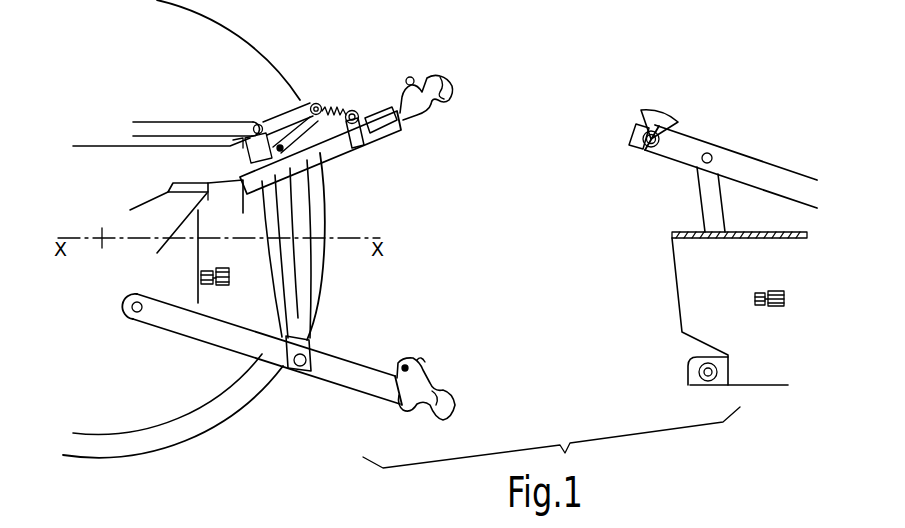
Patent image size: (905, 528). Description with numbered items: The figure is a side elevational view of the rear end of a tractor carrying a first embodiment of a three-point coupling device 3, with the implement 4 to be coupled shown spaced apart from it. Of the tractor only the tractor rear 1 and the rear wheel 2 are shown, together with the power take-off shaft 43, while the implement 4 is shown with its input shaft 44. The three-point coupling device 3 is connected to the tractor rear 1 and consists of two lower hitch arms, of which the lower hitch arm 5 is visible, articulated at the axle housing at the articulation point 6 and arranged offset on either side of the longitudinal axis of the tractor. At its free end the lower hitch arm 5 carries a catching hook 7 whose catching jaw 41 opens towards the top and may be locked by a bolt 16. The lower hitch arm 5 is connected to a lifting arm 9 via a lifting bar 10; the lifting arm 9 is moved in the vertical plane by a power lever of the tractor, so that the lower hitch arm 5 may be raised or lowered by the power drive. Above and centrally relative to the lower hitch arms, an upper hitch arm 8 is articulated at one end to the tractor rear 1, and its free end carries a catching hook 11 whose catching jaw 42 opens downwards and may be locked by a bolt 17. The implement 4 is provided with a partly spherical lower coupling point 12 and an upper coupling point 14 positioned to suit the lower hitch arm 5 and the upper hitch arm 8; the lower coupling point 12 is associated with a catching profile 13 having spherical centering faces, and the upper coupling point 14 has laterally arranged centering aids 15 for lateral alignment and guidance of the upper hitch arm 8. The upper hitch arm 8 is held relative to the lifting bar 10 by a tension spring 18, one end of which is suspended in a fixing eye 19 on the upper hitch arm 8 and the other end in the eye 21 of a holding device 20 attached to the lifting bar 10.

The tractor rear 1 is at (153, 212).
The rear wheel 2 is at (193, 387).
The three-point coupling device 3 is at (334, 390).
The implement 4 is at (775, 248).
The lower hitch arm 5 is at (377, 387).
The articulation point 6 is at (135, 315).
The catching hook 7 is at (437, 413).
The upper hitch arm 8 is at (378, 133).
The lifting arm 9 is at (177, 130).
The lifting bar 10 is at (277, 217).
The catching hook 11 is at (425, 86).
The lower coupling point 12 is at (708, 381).
The catching profile 13 is at (690, 368).
The upper coupling point 14 is at (637, 133).
The centering aid 15 is at (660, 118).
The bolt 16 is at (437, 387).
The bolt 17 is at (405, 77).
The tension spring 18 is at (337, 107).
The fixing eye 19 is at (356, 111).
The holding device 20 is at (307, 123).
The eye 21 is at (315, 102).
The catching jaw 41 is at (443, 388).
The catching jaw 42 is at (455, 96).
The power take-off shaft 43 is at (230, 278).
The input shaft 44 is at (752, 297).